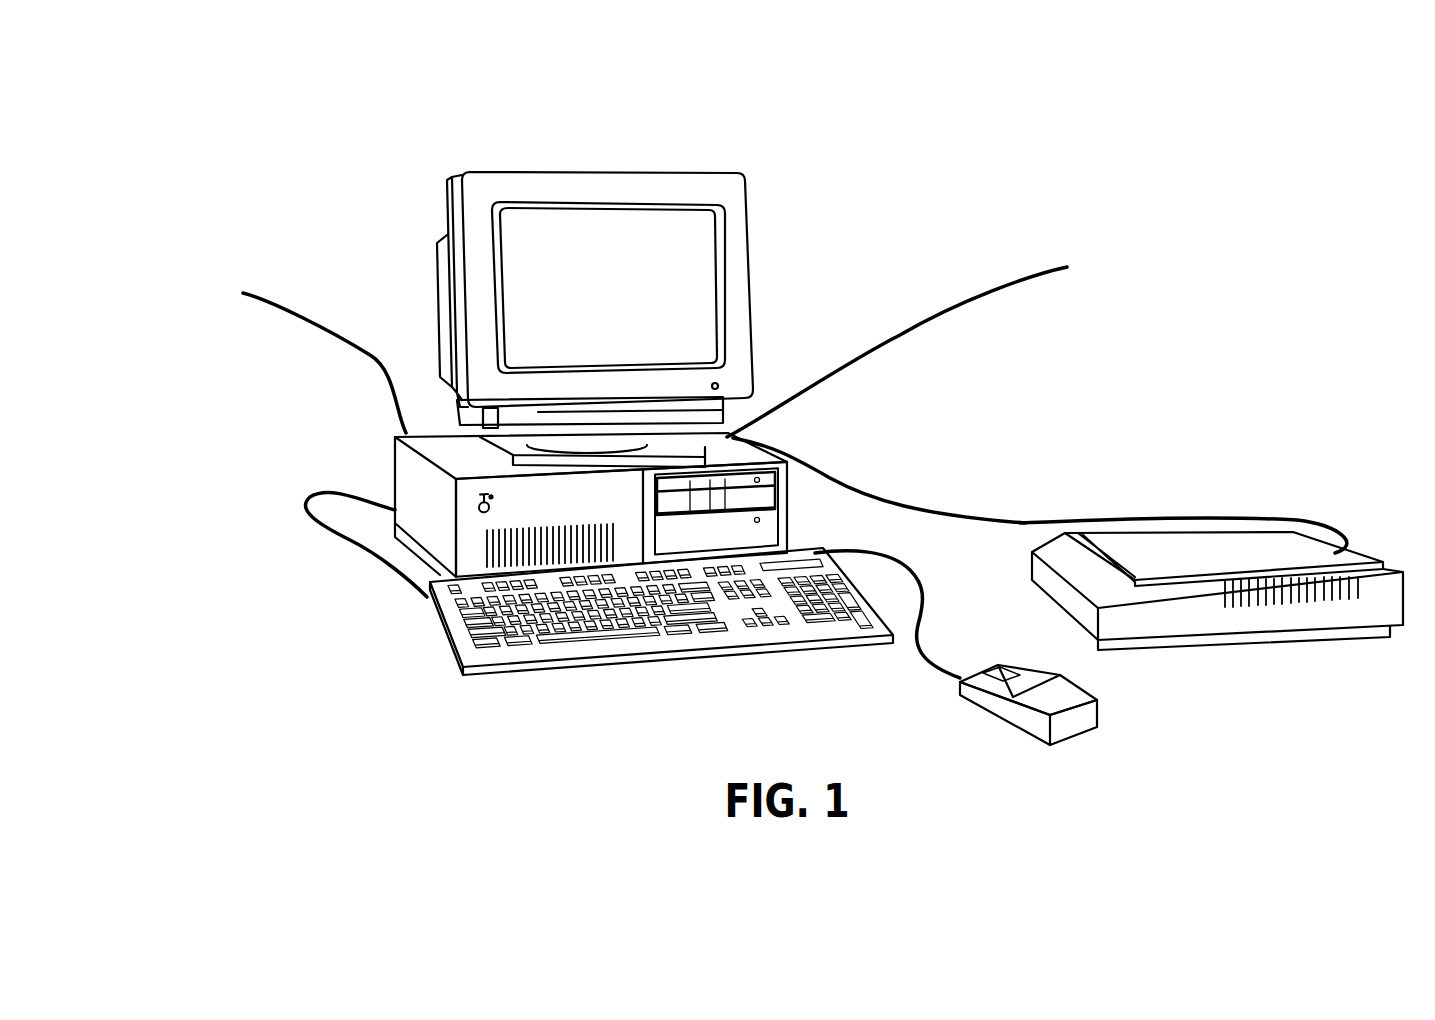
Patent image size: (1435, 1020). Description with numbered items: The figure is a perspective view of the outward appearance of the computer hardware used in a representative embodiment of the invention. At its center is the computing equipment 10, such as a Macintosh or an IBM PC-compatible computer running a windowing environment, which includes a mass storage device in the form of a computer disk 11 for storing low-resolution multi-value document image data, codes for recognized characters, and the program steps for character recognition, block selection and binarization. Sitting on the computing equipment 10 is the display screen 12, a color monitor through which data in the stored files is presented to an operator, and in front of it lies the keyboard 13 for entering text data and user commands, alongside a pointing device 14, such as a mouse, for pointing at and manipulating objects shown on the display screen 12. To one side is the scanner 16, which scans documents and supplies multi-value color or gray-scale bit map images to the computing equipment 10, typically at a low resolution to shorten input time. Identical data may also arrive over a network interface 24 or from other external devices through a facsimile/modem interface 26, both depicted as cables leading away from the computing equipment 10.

The computing equipment 10 is at (858, 246).
The computer disk 11 is at (743, 503).
The display screen 12 is at (638, 172).
The keyboard 13 is at (535, 653).
The pointing device 14 is at (1067, 737).
The scanner 16 is at (1257, 640).
The network interface 24 is at (1027, 283).
The facsimile/modem interface 26 is at (360, 344).